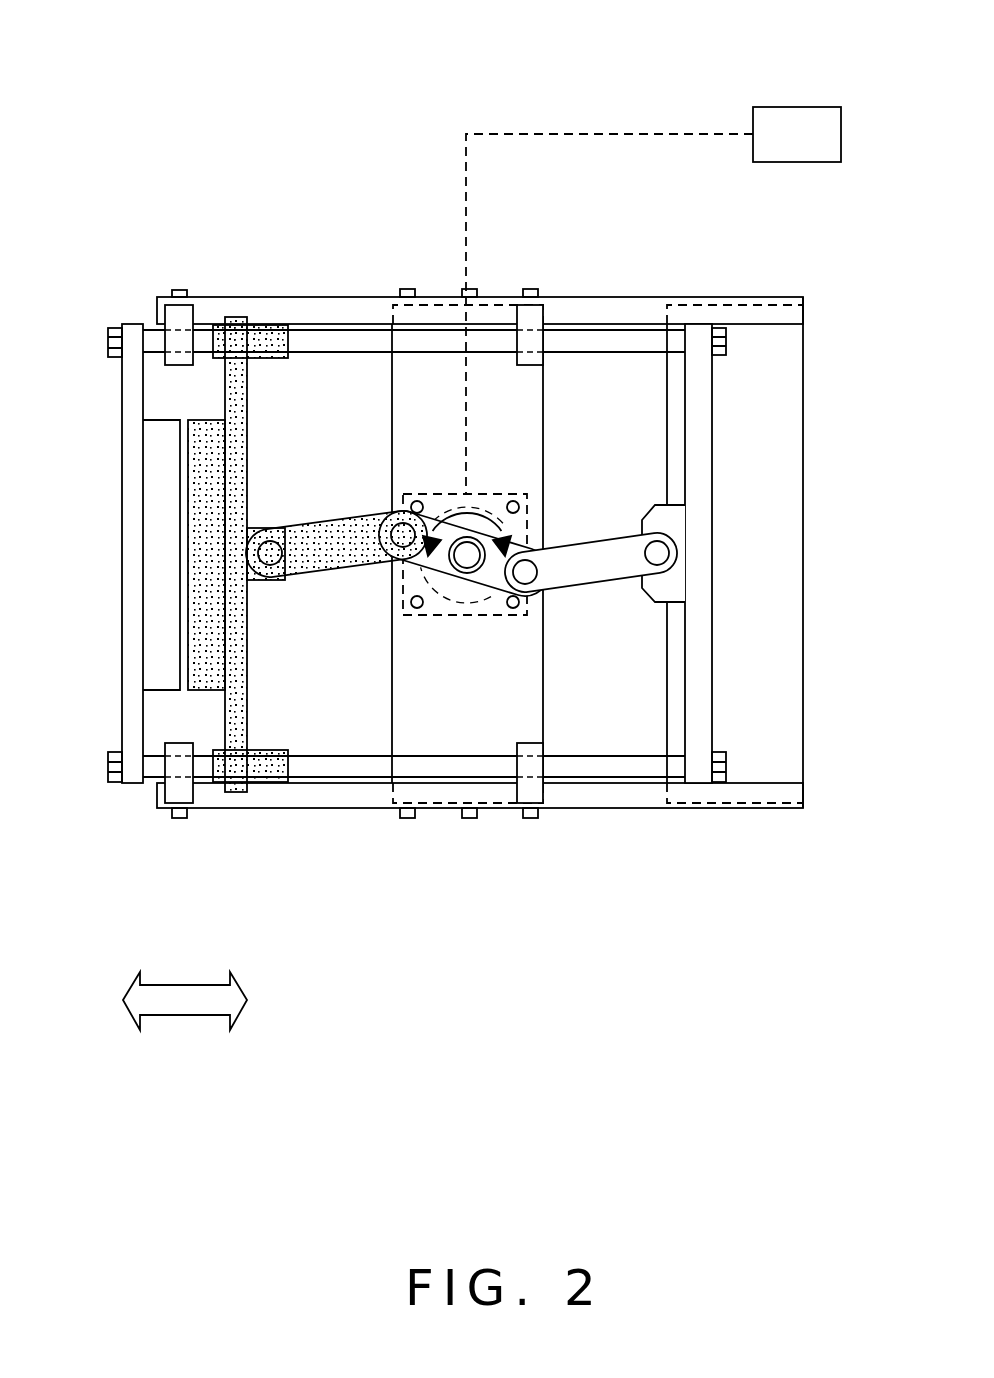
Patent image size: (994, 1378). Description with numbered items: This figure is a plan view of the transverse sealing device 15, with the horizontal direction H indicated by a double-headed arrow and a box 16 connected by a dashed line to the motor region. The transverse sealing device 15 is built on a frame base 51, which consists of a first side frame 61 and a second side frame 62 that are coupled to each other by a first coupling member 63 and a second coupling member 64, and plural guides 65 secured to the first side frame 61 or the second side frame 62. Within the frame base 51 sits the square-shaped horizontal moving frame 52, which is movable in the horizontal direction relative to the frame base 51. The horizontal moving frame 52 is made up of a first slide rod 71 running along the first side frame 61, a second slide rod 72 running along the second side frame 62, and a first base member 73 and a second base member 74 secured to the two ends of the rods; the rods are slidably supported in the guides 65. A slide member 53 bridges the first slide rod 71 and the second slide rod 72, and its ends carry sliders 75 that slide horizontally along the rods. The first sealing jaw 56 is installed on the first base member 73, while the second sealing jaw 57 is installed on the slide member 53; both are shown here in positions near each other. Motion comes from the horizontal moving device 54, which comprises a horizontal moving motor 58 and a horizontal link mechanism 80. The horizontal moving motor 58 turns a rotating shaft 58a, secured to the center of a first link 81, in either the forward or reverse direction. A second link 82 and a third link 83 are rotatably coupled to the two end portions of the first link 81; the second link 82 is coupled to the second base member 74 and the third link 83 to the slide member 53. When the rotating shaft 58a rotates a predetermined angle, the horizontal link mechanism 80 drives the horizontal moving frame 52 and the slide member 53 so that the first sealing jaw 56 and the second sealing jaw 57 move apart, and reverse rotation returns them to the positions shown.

The transverse sealing device 15 is at (183, 125).
The controller 16 is at (792, 130).
The frame base 51 is at (318, 268).
The horizontal moving frame 52 is at (110, 477).
The slide member 53 is at (242, 464).
The horizontal moving device 54 is at (582, 574).
The first sealing jaw 56 is at (160, 657).
The second sealing jaw 57 is at (208, 667).
The horizontal moving motor 58 is at (500, 480).
The rotating shaft 58a is at (467, 557).
The first side frame 61 is at (616, 300).
The second side frame 62 is at (622, 800).
The first coupling member 63 is at (443, 742).
The second coupling member 64 is at (752, 733).
The guides 65 is at (176, 300).
The first slide rod 71 is at (375, 340).
The second slide rod 72 is at (338, 764).
The first base member 73 is at (133, 565).
The second base member 74 is at (695, 517).
The sliders 75 is at (268, 352).
The horizontal link mechanism 80 is at (598, 658).
The first link 81 is at (495, 578).
The second link 82 is at (592, 562).
The third link 83 is at (325, 563).